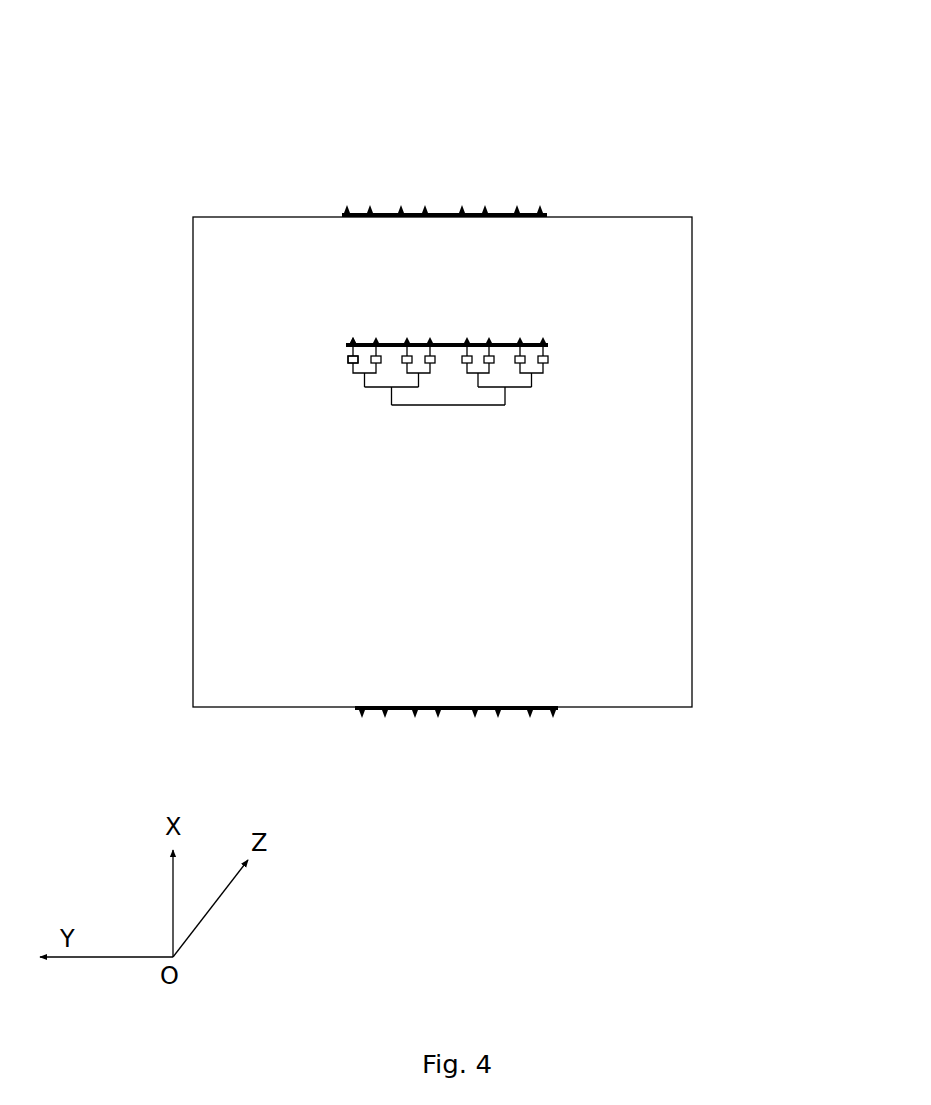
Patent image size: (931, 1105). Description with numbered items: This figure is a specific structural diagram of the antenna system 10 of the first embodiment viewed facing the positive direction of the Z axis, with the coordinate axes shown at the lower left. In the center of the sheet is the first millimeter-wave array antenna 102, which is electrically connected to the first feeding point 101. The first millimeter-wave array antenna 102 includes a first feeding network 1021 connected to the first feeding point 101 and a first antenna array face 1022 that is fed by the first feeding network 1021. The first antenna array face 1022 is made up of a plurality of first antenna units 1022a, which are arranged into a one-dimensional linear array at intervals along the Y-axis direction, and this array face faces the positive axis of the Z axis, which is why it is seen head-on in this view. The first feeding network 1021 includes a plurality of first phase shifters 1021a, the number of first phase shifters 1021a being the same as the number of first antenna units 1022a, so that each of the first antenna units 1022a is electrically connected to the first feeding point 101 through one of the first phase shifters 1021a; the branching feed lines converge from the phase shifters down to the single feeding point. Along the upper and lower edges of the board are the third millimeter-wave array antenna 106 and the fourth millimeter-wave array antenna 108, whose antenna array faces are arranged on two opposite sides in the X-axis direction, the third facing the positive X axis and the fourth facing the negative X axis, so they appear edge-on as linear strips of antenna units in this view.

The antenna module 10 is at (472, 40).
The third millimeter-wave array antenna 106 is at (384, 174).
The fourth millimeter-wave array antenna 108 is at (371, 722).
The first millimeter-wave array antenna 102 is at (452, 336).
The first antenna array face 1022 is at (552, 337).
The first feeding network 1021 is at (553, 364).
The first antenna units 1022a is at (349, 341).
The first phase shifters 1021a is at (347, 362).
The first feeding point 101 is at (448, 412).